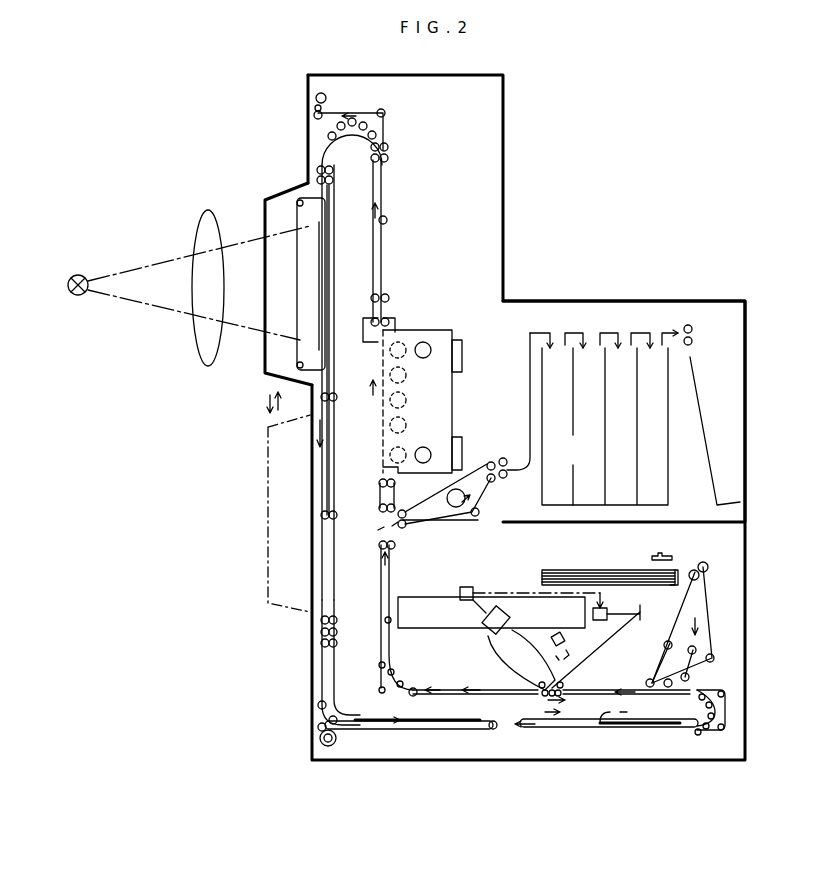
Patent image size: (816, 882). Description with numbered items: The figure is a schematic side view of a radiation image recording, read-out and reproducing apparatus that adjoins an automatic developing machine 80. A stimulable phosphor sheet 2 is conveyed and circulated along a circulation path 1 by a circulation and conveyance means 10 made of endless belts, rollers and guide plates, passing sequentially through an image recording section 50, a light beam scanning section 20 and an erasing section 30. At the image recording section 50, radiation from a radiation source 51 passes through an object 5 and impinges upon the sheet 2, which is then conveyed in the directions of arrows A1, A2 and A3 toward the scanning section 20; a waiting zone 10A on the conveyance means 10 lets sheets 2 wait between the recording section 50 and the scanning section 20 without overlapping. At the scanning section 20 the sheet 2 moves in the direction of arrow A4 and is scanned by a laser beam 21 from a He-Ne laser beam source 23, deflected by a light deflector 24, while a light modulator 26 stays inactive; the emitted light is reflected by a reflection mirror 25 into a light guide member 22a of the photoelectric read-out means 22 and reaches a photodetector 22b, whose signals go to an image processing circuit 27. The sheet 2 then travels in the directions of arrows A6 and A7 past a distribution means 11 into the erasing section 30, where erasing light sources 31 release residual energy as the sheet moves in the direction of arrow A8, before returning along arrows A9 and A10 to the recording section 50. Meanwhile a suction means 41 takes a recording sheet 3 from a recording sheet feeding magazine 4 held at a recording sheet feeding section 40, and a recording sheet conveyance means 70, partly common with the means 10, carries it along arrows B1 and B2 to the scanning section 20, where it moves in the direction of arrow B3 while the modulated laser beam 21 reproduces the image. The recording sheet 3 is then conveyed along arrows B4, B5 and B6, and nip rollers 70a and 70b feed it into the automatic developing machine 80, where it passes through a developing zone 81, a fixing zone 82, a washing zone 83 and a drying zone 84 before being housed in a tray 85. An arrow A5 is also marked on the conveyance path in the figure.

The circulation path 1 is at (401, 181).
The stimulable phosphor sheet 2 is at (312, 272).
The recording sheet 3 is at (570, 570).
The recording sheet feeding magazine 4 is at (698, 573).
The object 5 is at (215, 228).
The circulation and conveyance means 10 is at (377, 256).
The waiting zone 10A is at (494, 725).
The distribution means 11 is at (390, 527).
The light beam scanning section 20 is at (616, 641).
The laser beam 21 is at (637, 618).
The photoelectric read-out means 22 is at (474, 646).
The light guide member 22a is at (520, 660).
The photodetector 22b is at (502, 616).
The He-Ne laser beam source 23 is at (428, 620).
The light deflector 24 is at (565, 607).
The reflection mirror 25 is at (572, 650).
The light modulator 26 is at (610, 614).
The image processing circuit 27 is at (475, 588).
The erasing section 30 is at (451, 317).
The erasing light sources 31 is at (407, 379).
The recording sheet feeding section 40 is at (633, 563).
The suction means 41 is at (668, 560).
The image recording section 50 is at (275, 182).
The radiation source 51 is at (80, 272).
The recording sheet conveyance means 70 is at (460, 520).
The nip roller 70a is at (489, 460).
The nip roller 70b is at (510, 470).
The automatic developing machine 80 is at (626, 293).
The developing zone 81 is at (545, 485).
The fixing zone 82 is at (578, 515).
The washing zone 83 is at (610, 508).
The drying zone 84 is at (660, 487).
The tray 85 is at (704, 427).
The conveyance direction arrow A1 is at (315, 430).
The conveyance direction arrow A2 is at (398, 722).
The conveyance direction arrow A3 is at (715, 705).
The conveyance direction arrow A4 is at (578, 706).
The transport direction A5 is at (548, 722).
The conveyance direction arrow A6 is at (435, 686).
The conveyance direction arrow A7 is at (388, 556).
The conveyance direction arrow A8 is at (370, 393).
The conveyance direction arrow A9 is at (380, 212).
The conveyance direction arrow A10 is at (358, 113).
The conveyance direction arrow B1 is at (691, 610).
The conveyance direction arrow B2 is at (628, 690).
The conveyance direction arrow B3 is at (530, 722).
The conveyance direction arrow B4 is at (470, 688).
The conveyance direction arrow B5 is at (388, 581).
The conveyance direction arrow B6 is at (470, 515).